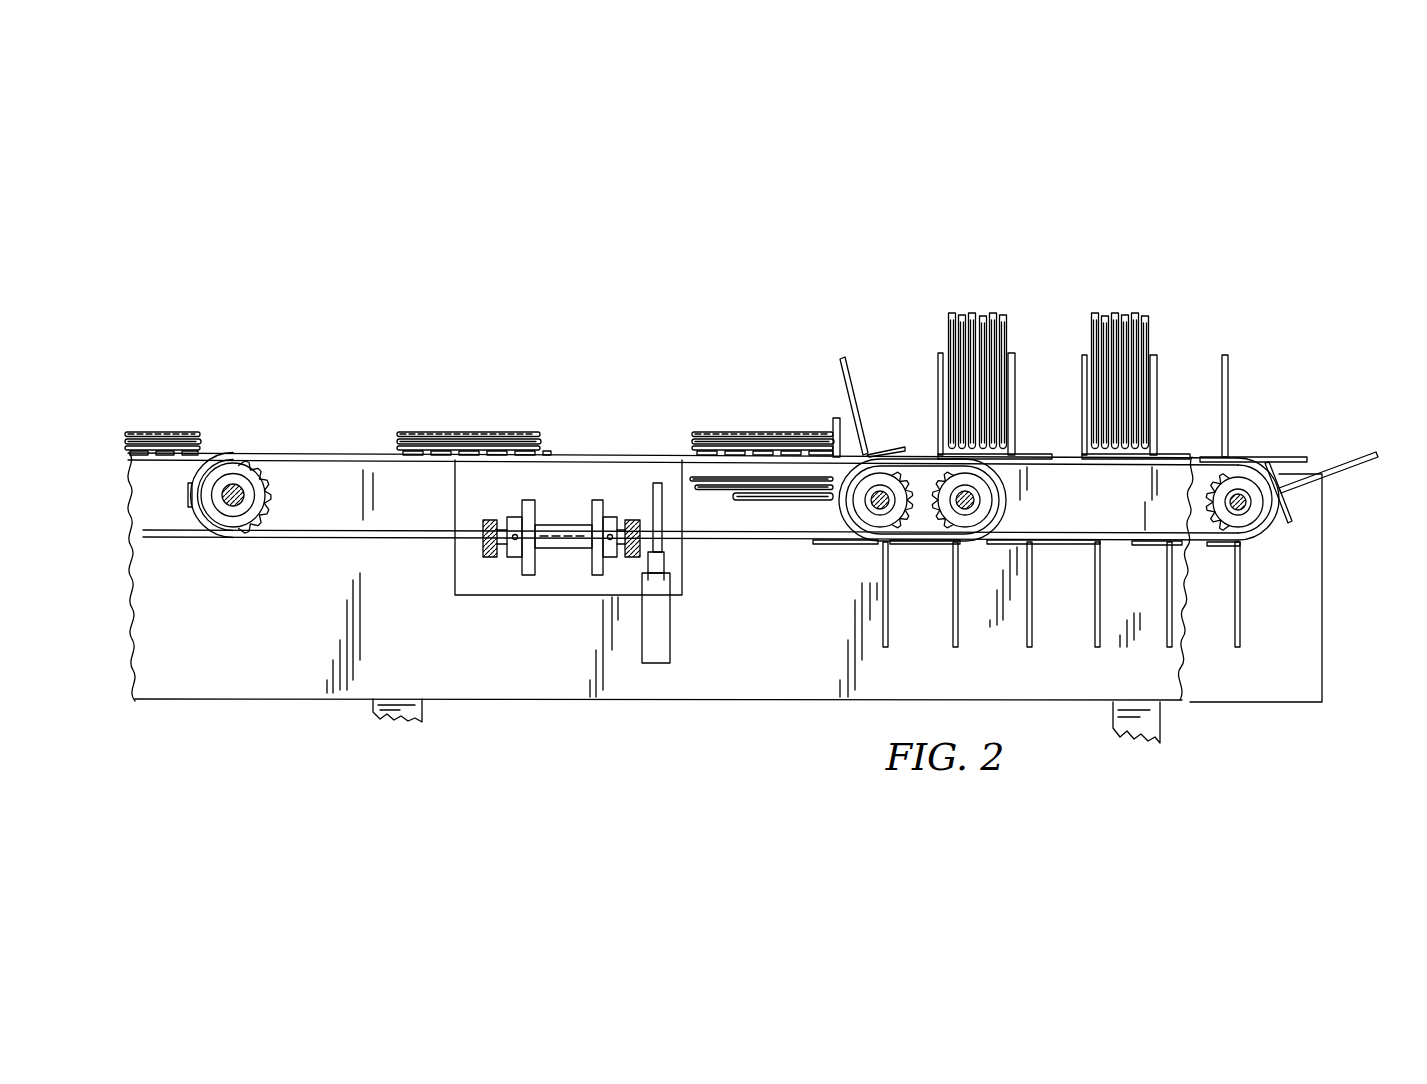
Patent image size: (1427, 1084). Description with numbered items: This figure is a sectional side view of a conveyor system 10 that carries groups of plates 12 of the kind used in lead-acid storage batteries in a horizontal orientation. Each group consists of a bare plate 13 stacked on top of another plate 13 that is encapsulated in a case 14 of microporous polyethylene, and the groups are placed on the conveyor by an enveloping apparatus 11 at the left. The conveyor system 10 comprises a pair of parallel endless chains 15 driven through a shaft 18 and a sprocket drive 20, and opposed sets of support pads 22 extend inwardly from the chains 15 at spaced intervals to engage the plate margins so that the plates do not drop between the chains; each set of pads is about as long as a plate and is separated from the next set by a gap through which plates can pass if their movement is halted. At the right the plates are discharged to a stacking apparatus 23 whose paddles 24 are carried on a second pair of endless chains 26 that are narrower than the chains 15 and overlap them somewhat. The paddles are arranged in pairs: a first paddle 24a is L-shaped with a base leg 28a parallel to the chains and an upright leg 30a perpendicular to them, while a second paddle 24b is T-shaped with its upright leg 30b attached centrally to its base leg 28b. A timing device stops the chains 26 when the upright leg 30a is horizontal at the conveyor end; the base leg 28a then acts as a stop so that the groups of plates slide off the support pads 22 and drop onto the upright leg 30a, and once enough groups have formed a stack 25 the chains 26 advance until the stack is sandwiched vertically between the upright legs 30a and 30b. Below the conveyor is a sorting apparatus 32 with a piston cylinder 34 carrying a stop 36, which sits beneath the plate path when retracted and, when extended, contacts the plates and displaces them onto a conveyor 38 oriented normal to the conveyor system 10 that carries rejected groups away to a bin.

The conveyor system 10 is at (310, 436).
The enveloping apparatus 11 is at (121, 529).
The plates 12 is at (491, 424).
The plate 13 is at (153, 434).
The case 14 is at (199, 447).
The endless chains 15 is at (380, 543).
The shaft 18 is at (222, 495).
The sprocket drive 20 is at (269, 500).
The support pads 22 is at (253, 540).
The stacking apparatus 23 is at (1186, 327).
The paddles 24 is at (854, 369).
The first paddle 24a is at (932, 363).
The second paddle 24b is at (1159, 354).
The stack 25 is at (989, 297).
The endless chains 26 is at (1268, 531).
The base leg 28a is at (833, 418).
The base leg 28b is at (883, 449).
The upright leg 30a is at (757, 503).
The upright leg 30b is at (863, 412).
The sorting apparatus 32 is at (572, 618).
The piston cylinder 34 is at (671, 625).
The stop 36 is at (663, 512).
The conveyor 38 is at (569, 501).